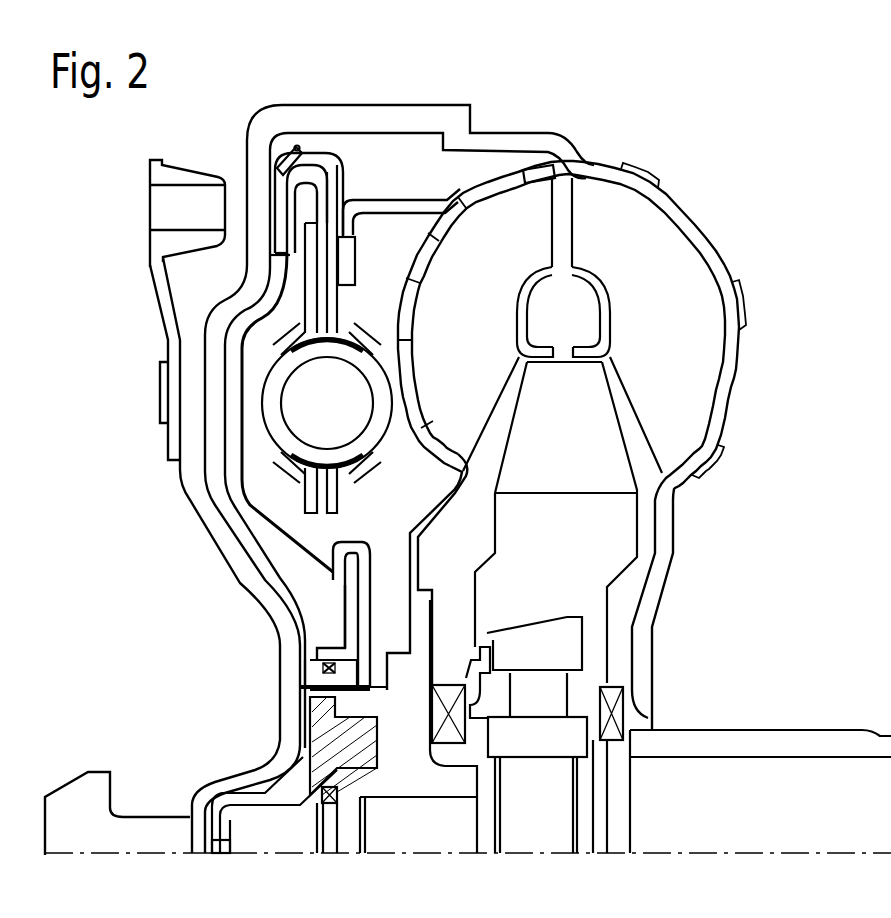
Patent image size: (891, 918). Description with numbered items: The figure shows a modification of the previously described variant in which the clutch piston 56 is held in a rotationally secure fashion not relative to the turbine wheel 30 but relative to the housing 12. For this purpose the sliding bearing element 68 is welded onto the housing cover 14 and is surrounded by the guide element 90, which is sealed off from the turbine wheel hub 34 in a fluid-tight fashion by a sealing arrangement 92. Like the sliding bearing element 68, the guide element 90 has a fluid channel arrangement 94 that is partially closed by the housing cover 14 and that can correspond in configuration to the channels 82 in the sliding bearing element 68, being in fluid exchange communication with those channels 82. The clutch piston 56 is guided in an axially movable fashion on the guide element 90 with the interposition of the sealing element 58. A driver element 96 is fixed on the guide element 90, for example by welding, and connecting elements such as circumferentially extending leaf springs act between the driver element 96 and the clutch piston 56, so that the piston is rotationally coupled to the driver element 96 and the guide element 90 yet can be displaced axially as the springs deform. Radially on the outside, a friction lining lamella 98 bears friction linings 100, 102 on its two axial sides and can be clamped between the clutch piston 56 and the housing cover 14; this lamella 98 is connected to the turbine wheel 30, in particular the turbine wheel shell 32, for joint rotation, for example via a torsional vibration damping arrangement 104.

The housing 12 is at (496, 128).
The housing cover 14 is at (348, 120).
The turbine wheel 30 is at (415, 457).
The turbine wheel shell 32 is at (541, 173).
The turbine wheel hub 34 is at (405, 778).
The clutch piston 56 is at (249, 505).
The sealing element 58 is at (312, 660).
The sliding bearing element 68 is at (302, 797).
The channels 82 is at (255, 795).
The guide element 90 is at (305, 684).
The sealing arrangement 92 is at (318, 708).
The fluid channel arrangement 94 is at (309, 675).
The driver element 96 is at (340, 562).
The friction lining lamella 98 is at (273, 183).
The friction lining 100 is at (272, 233).
The friction lining 102 is at (273, 252).
The torsional vibration damping arrangement 104 is at (379, 267).